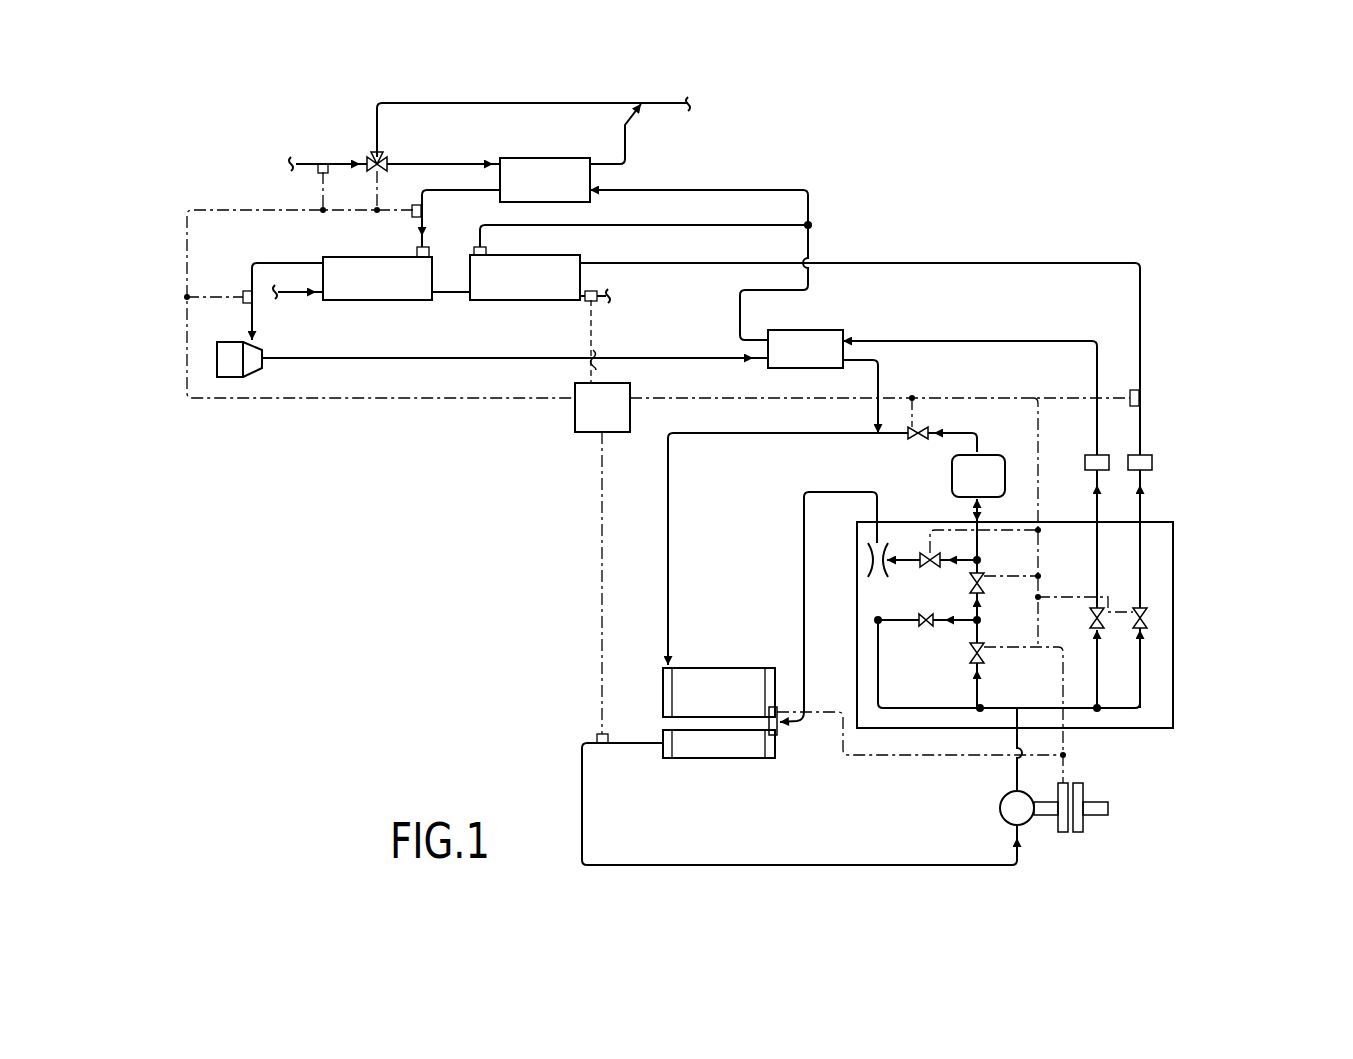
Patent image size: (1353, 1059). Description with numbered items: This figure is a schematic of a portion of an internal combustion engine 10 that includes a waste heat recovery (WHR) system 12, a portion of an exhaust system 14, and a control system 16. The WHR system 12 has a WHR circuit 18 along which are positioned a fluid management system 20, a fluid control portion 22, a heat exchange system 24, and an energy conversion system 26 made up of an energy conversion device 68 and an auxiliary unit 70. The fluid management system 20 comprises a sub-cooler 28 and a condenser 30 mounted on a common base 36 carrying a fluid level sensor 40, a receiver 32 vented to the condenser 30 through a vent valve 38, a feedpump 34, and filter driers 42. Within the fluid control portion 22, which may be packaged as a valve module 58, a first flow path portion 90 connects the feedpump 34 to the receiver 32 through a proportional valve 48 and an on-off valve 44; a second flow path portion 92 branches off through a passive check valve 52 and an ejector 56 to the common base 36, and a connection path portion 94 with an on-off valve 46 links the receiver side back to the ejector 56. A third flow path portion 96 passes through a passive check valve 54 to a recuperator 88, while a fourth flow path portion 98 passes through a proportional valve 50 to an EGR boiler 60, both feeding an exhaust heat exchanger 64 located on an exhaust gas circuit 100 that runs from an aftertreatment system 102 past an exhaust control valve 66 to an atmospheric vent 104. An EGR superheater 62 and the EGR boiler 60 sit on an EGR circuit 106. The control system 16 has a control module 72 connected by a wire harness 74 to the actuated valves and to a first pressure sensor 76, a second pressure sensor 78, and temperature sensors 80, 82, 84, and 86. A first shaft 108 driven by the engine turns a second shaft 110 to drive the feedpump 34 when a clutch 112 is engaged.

The internal combustion engine 10 is at (190, 167).
The waste heat recovery (WHR) system 12 is at (978, 214).
The exhaust system 14 is at (300, 133).
The control system 16 is at (560, 458).
The WHR circuit 18 is at (670, 548).
The fluid management system 20 is at (575, 678).
The fluid control portion 22 is at (1235, 755).
The heat exchange system 24 is at (815, 165).
The energy conversion system 26 is at (170, 328).
The sub-cooler 28 is at (732, 758).
The condenser 30 is at (727, 666).
The receiver 32 is at (965, 490).
The feedpump 34 is at (1000, 808).
The common base 36 is at (777, 757).
The vent valve 38 is at (908, 440).
The fluid level sensor 40 is at (777, 732).
The filter drier 42 is at (1085, 464).
The on-off valve 44 is at (984, 590).
The on-off valve 46 is at (940, 566).
The proportional valve 48 is at (984, 660).
The proportional valve 50 is at (1147, 618).
The passive check valve 52 is at (925, 628).
The passive check valve 54 is at (1100, 616).
The ejector 56 is at (870, 548).
The valve module 58 is at (1172, 728).
The EGR boiler 60 is at (512, 293).
The EGR superheater 62 is at (364, 293).
The exhaust heat exchanger 64 is at (532, 194).
The exhaust control valve 66 is at (375, 157).
The energy conversion device 68 is at (252, 375).
The auxiliary unit 70 is at (217, 362).
The control module 72 is at (589, 420).
The wire harness 74 is at (595, 374).
The first pressure sensor 76 is at (597, 738).
The second pressure sensor 78 is at (1138, 392).
The first temperature sensor 80 is at (412, 214).
The second temperature sensor 82 is at (244, 296).
The third temperature sensor 84 is at (590, 302).
The fourth temperature sensor 86 is at (318, 172).
The recuperator 88 is at (792, 363).
The first flow path portion 90 is at (977, 697).
The second flow path portion 92 is at (890, 618).
The connection path portion 94 is at (908, 556).
The third flow path portion 96 is at (1100, 682).
The fourth flow path portion 98 is at (1143, 668).
The exhaust gas circuit 100 is at (440, 160).
The aftertreatment system 102 is at (292, 166).
The atmospheric vent 104 is at (693, 103).
The EGR circuit 106 is at (287, 298).
The first shaft 108 is at (1100, 815).
The second shaft 110 is at (1043, 815).
The clutch 112 is at (1080, 783).